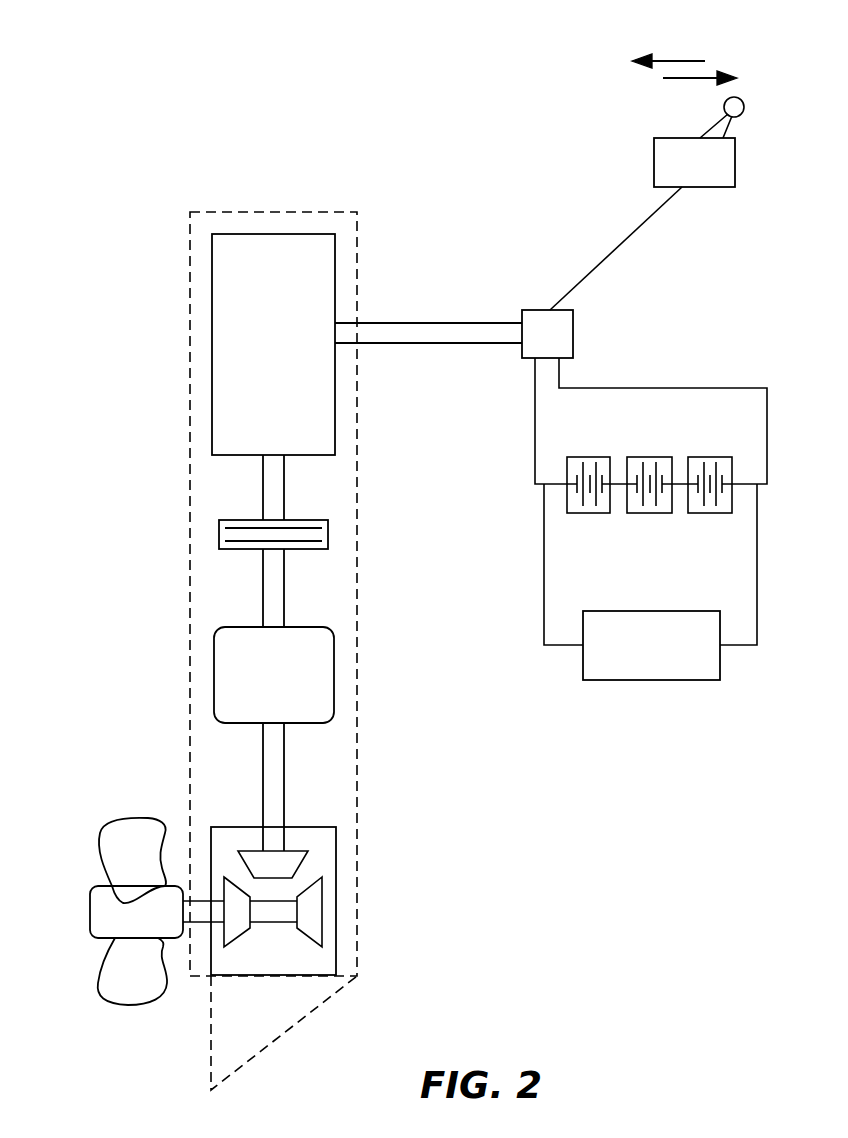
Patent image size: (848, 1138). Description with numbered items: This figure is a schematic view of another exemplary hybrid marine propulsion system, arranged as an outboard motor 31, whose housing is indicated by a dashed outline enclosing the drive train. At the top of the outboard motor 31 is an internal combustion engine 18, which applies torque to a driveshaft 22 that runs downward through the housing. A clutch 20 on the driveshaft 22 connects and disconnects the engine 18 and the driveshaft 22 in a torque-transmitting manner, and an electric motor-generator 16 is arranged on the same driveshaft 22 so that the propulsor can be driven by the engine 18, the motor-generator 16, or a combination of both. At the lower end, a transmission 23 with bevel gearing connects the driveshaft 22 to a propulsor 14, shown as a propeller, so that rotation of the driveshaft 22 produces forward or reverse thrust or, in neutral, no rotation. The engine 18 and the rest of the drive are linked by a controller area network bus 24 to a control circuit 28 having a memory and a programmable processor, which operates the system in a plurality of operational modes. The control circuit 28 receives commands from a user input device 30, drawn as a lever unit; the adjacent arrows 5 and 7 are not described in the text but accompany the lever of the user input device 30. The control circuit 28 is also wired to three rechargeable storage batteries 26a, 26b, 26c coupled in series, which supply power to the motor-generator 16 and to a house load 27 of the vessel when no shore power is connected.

The lever direction arrow 5 is at (678, 79).
The lever direction arrow 7 is at (680, 61).
The propulsor 14 is at (100, 912).
The electric motor-generator 16 is at (214, 678).
The internal combustion engine 18 is at (212, 370).
The clutch 20 is at (219, 532).
The driveshaft 22 is at (284, 770).
The transmission 23 is at (313, 960).
The controller area network bus 24 is at (395, 323).
The rechargeable storage battery 26a is at (581, 514).
The rechargeable storage battery 26b is at (640, 514).
The rechargeable storage battery 26c is at (702, 514).
The house load 27 is at (647, 681).
The control circuit 28 is at (573, 337).
The user input device 30 is at (737, 163).
The outboard motor 31 is at (358, 592).